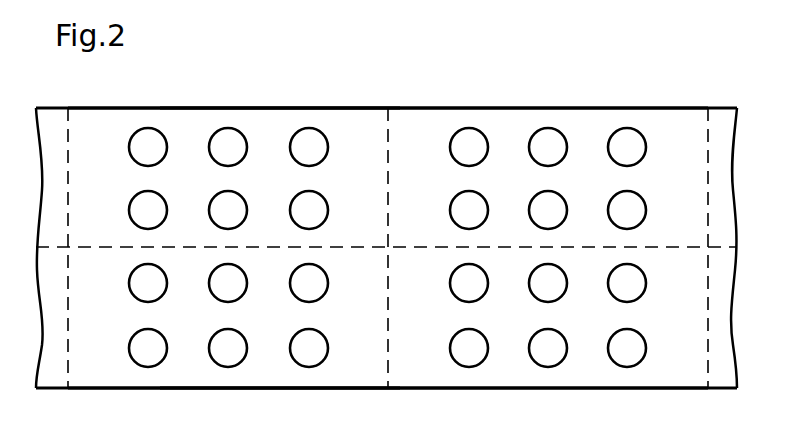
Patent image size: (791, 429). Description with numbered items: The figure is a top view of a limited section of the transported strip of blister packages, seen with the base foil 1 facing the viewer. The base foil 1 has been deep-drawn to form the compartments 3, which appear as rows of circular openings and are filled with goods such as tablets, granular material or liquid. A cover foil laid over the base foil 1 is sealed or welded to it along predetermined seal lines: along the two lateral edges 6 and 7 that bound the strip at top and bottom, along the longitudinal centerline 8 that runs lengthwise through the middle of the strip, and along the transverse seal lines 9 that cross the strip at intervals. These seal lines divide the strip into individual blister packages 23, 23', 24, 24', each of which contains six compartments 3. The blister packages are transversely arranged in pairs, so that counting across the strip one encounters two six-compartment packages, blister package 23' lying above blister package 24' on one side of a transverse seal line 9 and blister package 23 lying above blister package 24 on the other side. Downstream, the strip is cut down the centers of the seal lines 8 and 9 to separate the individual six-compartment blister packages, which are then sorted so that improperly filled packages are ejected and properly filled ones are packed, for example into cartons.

The base foil 1 is at (182, 133).
The compartments 3 is at (313, 353).
The lateral edge 6 is at (317, 107).
The lateral edge 7 is at (272, 390).
The longitudinal centerline 8 is at (427, 238).
The transverse seal lines 9 is at (397, 136).
The blister package 23 is at (548, 104).
The blister package 23' is at (228, 110).
The blister package 24 is at (548, 383).
The blister package 24' is at (228, 385).